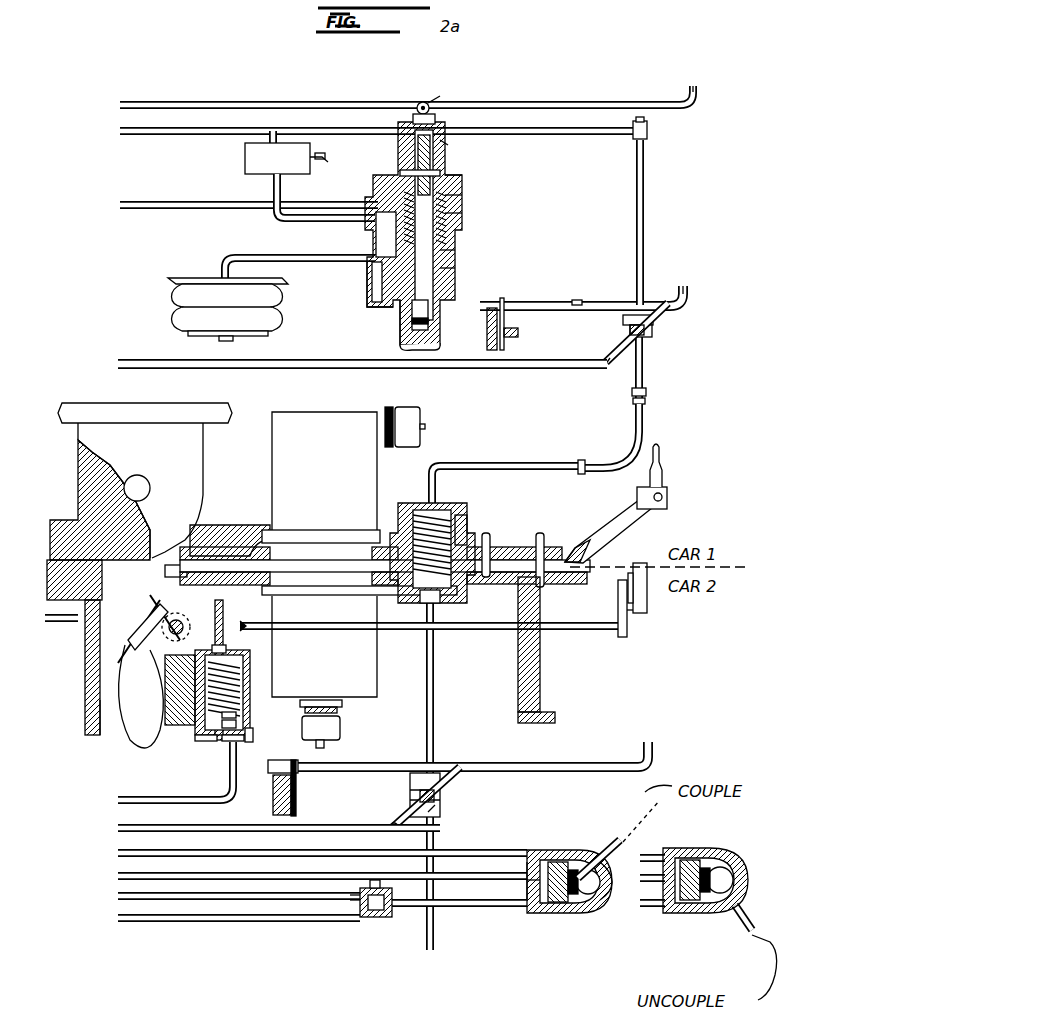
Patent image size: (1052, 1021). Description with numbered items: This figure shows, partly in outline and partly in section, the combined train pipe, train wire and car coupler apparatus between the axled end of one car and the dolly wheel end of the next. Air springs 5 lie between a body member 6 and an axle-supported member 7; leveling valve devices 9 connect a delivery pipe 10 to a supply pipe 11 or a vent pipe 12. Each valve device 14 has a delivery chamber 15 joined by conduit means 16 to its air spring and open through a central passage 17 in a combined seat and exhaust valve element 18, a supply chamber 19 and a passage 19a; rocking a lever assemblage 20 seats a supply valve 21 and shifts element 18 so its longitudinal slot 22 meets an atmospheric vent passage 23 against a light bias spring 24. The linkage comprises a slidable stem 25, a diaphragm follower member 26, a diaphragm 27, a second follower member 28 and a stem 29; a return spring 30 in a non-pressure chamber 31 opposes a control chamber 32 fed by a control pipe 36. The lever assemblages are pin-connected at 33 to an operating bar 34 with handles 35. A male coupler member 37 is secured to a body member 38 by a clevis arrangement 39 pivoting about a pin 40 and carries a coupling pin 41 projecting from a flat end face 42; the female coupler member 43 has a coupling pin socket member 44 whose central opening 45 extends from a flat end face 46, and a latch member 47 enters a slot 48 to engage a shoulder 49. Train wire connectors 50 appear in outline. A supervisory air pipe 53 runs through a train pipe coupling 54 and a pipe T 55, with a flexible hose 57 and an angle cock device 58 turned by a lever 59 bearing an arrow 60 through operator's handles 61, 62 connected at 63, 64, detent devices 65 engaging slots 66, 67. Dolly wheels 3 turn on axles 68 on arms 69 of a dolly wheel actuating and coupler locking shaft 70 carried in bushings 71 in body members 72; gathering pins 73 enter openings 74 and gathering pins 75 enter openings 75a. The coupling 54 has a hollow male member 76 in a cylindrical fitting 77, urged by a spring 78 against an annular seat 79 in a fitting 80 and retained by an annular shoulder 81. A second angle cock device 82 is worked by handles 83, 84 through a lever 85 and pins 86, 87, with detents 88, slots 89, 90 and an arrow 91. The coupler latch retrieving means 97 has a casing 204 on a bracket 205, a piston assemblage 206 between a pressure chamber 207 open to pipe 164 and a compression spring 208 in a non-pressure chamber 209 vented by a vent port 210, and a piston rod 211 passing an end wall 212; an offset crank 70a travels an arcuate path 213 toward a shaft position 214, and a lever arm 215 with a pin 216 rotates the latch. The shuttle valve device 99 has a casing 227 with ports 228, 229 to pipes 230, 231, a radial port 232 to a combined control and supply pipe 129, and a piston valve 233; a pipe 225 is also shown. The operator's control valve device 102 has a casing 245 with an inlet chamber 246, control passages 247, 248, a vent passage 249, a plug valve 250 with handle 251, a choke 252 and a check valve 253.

The dolly wheels 3 is at (650, 598).
The air spring 5 is at (182, 303).
The body member 6 is at (176, 280).
The axle-supported member 7 is at (190, 328).
The leveling valve device 9 is at (255, 156).
The air spring delivery pipe 10 is at (276, 190).
The supply pipe 11 is at (172, 135).
The vent pipe 12 is at (322, 160).
The manually operated valve device 14 is at (422, 214).
The delivery chamber 15 is at (402, 316).
The conduit means 16 is at (248, 256).
The central passage 17 is at (440, 304).
The combined supply valve seat and exhaust valve element 18 is at (436, 320).
The supply chamber 19 is at (440, 272).
The passage 19a is at (368, 235).
The lever assemblage 20 is at (422, 118).
The supply valve 21 is at (362, 256).
The longitudinal slot 22 is at (367, 288).
The atmospheric vent passage 23 is at (368, 268).
The light bias spring 24 is at (434, 346).
The axially slidable stem 25 is at (446, 262).
The diaphragm follower member 26 is at (456, 212).
The diaphragm 27 is at (456, 193).
The second diaphragm follower member 28 is at (452, 174).
The stem 29 is at (447, 154).
The return spring 30 is at (452, 248).
The non-pressure chamber 31 is at (456, 222).
The control chamber 32 is at (396, 180).
The pin connection 33 is at (440, 96).
The operating bar 34 is at (578, 104).
The handles 35 is at (675, 104).
The control pipe 36 is at (190, 208).
The male coupler member 37 is at (142, 557).
The body member 38 is at (176, 410).
The clevis arrangement 39 is at (140, 490).
The pin 40 is at (140, 490).
The coupling pin 41 is at (50, 578).
The flat end face 42 is at (62, 520).
The female coupler member 43 is at (250, 598).
The coupling pin socket member 44 is at (86, 666).
The central opening 45 is at (90, 692).
The flat end face 46 is at (215, 536).
The latch member 47 is at (148, 635).
The slot 48 is at (150, 600).
The shoulder 49 is at (141, 696).
The train wire connectors 50 is at (306, 420).
The supervisory air pipe 53 is at (644, 222).
The train pipe coupling 54 is at (452, 553).
The pipe T 55 is at (648, 138).
The flexible hose 57 is at (632, 440).
The angle cock device 58 is at (652, 338).
The lever 59 is at (656, 328).
The arrow 60 is at (632, 334).
The operator's handle 61 is at (622, 304).
The operator's handle 62 is at (572, 364).
The connection 63 is at (678, 300).
The connection 64 is at (586, 342).
The detent devices 65 is at (488, 332).
The slot 66 is at (502, 300).
The slot 67 is at (576, 302).
The axles 68 is at (616, 590).
The arms 69 is at (618, 606).
The dolly wheel actuating and coupler locking shaft 70 is at (56, 618).
The offset crank 70a is at (165, 624).
The bushings 71 is at (541, 612).
The body members 72 is at (520, 724).
The gathering pins 73 is at (550, 546).
The accommodating openings 74 is at (542, 534).
The gathering pins 75 is at (487, 580).
The accommodating openings 75a is at (500, 550).
The hollow male member 76 is at (458, 522).
The cylindrical fitting 77 is at (440, 512).
The spring 78 is at (420, 508).
The annular seat 79 is at (340, 596).
The fitting 80 is at (452, 604).
The annular shoulder 81 is at (321, 545).
The angle cock device 82 is at (434, 806).
The operator's handle 83 is at (622, 765).
The operator's handle 84 is at (126, 829).
The lever 85 is at (400, 804).
The pin 86 is at (462, 766).
The pin 87 is at (400, 830).
The detents 88 is at (296, 812).
The slot 89 is at (294, 760).
The slot 90 is at (368, 764).
The arrow 91 is at (420, 806).
The coupler latch retrieving means 97 is at (300, 700).
The shuttle valve device 99 is at (374, 882).
The operator's control valve device 102 is at (619, 888).
The combined control and supply pipe 129 is at (126, 919).
The pipe 164 is at (124, 800).
The hollow cylindrical casing 204 is at (232, 760).
The bracket 205 is at (191, 748).
The piston assemblage 206 is at (252, 742).
The pressure chamber 207 is at (222, 748).
The compression spring 208 is at (242, 724).
The non-pressure chamber 209 is at (242, 708).
The vent port 210 is at (242, 690).
The piston rod 211 is at (236, 656).
The end wall 212 is at (246, 672).
The arcuate path 213 is at (183, 690).
The shaft position 214 is at (166, 577).
The lever arm 215 is at (186, 622).
The pin 216 is at (222, 620).
The pipe 225 is at (126, 854).
The hollow cylindrical casing 227 is at (372, 918).
The port 228 is at (366, 874).
The port 229 is at (350, 904).
The pipe 230 is at (470, 904).
The pipe 231 is at (126, 897).
The radial port 232 is at (370, 916).
The piston valve 233 is at (350, 894).
The casing 245 is at (690, 844).
The inlet chamber 246 is at (552, 852).
The control passage 247 is at (576, 854).
The control passage 248 is at (558, 914).
The vent passage 249 is at (603, 912).
The plug valve 250 is at (725, 912).
The handle 251 is at (628, 824).
The choke 252 is at (525, 858).
The spring-biased check valve 253 is at (530, 912).